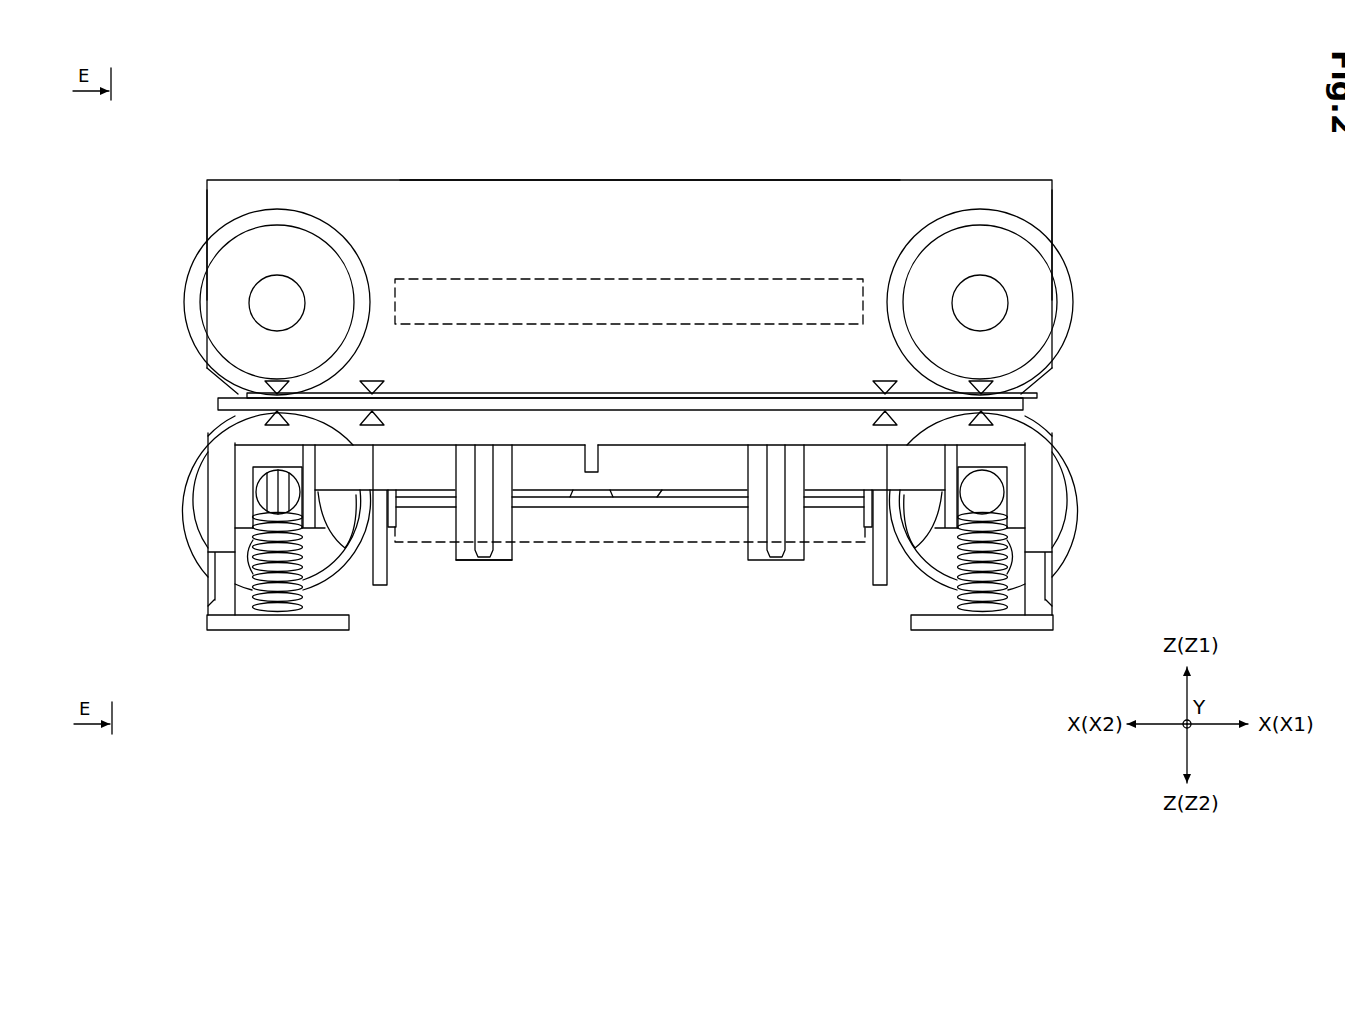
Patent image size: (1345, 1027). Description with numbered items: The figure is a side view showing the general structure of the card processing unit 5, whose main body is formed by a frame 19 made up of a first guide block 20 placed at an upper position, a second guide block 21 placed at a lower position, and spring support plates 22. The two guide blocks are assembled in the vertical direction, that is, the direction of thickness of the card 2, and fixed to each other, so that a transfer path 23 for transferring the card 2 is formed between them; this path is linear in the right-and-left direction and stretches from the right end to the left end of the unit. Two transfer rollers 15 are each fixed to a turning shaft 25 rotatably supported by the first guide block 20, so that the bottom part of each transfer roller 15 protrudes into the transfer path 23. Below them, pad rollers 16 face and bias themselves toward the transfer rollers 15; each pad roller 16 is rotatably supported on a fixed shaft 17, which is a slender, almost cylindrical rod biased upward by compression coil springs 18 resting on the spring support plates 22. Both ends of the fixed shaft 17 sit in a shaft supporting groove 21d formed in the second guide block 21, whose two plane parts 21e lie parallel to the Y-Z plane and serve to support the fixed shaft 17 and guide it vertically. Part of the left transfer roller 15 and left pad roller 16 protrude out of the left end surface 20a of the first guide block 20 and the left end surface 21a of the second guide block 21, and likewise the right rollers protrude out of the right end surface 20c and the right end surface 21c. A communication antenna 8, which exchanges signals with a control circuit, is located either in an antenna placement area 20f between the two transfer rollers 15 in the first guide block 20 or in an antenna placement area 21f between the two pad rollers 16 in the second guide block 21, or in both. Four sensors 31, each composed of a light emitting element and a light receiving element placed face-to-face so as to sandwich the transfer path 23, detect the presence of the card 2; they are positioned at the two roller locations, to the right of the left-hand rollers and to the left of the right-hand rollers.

The card 2 is at (1025, 404).
The card processing unit 5 is at (934, 90).
The communication antenna 8 is at (628, 279).
The transfer roller 15 is at (183, 300).
The pad roller 16 is at (185, 497).
The fixed shaft 17 is at (268, 468).
The compression coil spring 18 is at (303, 597).
The frame 19 is at (690, 180).
The first guide block 20 is at (345, 180).
The left end surface 20a is at (207, 197).
The right end surface 20c is at (1052, 207).
The antenna placement area 20f is at (770, 247).
The second guide block 21 is at (206, 430).
The left end surface 21a is at (208, 578).
The right end surface 21c is at (1053, 583).
The shaft supporting groove 21d is at (222, 427).
The plane part 21e is at (253, 470).
The antenna placement area 21f is at (514, 600).
The spring support plate 22 is at (277, 632).
The transfer path 23 is at (607, 393).
The turning shaft 25 is at (277, 275).
The sensor 31 is at (279, 380).